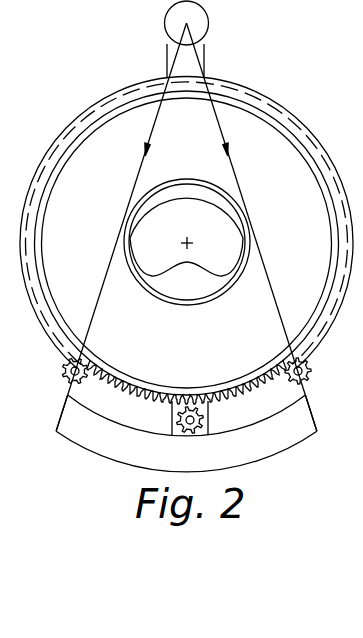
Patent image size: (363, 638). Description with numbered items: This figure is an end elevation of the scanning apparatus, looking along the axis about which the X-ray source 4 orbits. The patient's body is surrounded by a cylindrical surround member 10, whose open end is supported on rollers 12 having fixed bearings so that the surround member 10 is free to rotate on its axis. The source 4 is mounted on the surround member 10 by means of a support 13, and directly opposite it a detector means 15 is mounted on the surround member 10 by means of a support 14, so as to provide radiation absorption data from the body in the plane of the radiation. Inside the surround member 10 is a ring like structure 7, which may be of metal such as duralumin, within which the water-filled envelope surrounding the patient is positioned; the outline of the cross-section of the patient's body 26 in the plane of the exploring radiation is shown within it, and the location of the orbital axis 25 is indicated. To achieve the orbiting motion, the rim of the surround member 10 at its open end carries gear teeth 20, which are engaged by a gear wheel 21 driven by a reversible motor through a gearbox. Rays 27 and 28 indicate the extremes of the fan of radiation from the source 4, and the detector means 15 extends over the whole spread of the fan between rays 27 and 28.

The X-ray source 4 is at (210, 23).
The ring like structure 7 is at (153, 302).
The surround member 10 is at (262, 113).
The rollers 12 is at (80, 384).
The support 13 is at (205, 52).
The support 14 is at (212, 421).
The detector means 15 is at (290, 441).
The gear teeth 20 is at (106, 97).
The gear wheel 21 is at (186, 436).
The orbital axis 25 is at (186, 237).
The outline of the cross-section of the patient's body 26 is at (229, 208).
The ray 27 is at (140, 172).
The ray 28 is at (234, 172).